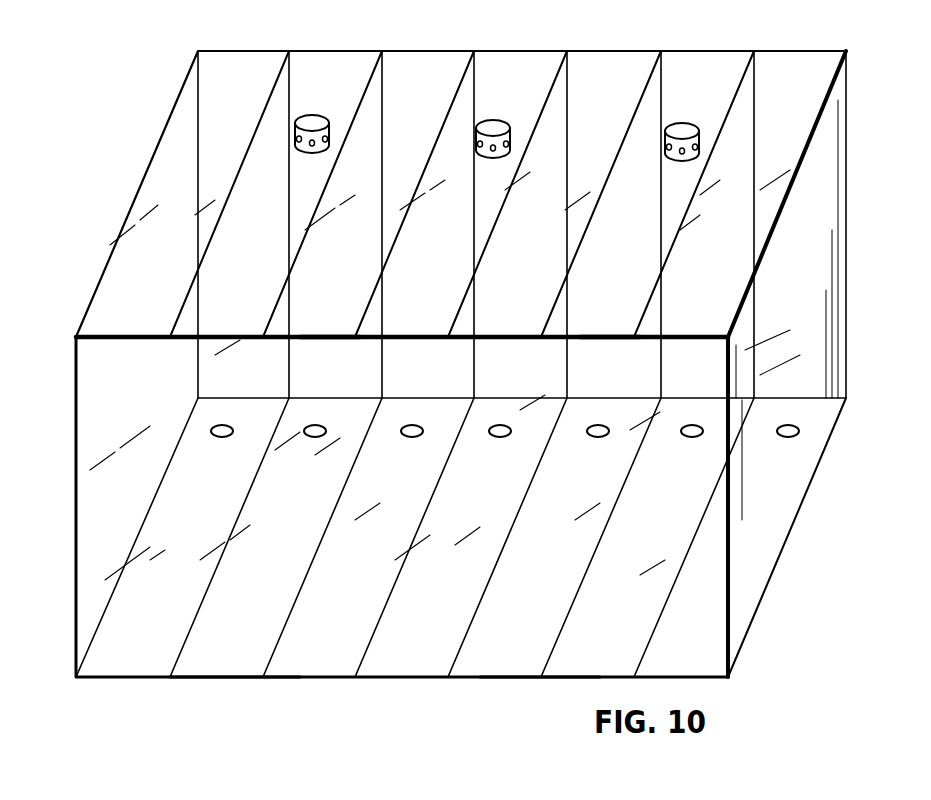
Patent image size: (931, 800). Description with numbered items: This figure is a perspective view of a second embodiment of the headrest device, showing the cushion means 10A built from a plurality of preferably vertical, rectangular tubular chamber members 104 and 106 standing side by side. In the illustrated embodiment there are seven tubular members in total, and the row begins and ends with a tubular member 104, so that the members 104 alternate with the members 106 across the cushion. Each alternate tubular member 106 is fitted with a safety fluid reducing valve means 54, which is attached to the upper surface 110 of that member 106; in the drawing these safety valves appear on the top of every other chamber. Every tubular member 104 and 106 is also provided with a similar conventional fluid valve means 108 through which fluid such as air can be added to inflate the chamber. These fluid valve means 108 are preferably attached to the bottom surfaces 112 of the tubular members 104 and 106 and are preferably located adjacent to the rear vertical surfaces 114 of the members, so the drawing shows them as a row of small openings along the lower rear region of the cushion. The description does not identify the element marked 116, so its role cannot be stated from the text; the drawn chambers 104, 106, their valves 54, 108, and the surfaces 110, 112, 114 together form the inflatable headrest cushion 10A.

The cushion means 10A is at (160, 100).
The tubular chamber member 104 is at (238, 62).
The alternate tubular chamber member 106 is at (332, 64).
The safety fluid reducing valve means 54 is at (326, 119).
The upper surface 110 is at (343, 303).
The fluid valve means 108 is at (222, 438).
The rear vertical surface 114 is at (772, 490).
The front wall 116 is at (328, 652).
The bottom surface 112 is at (218, 679).